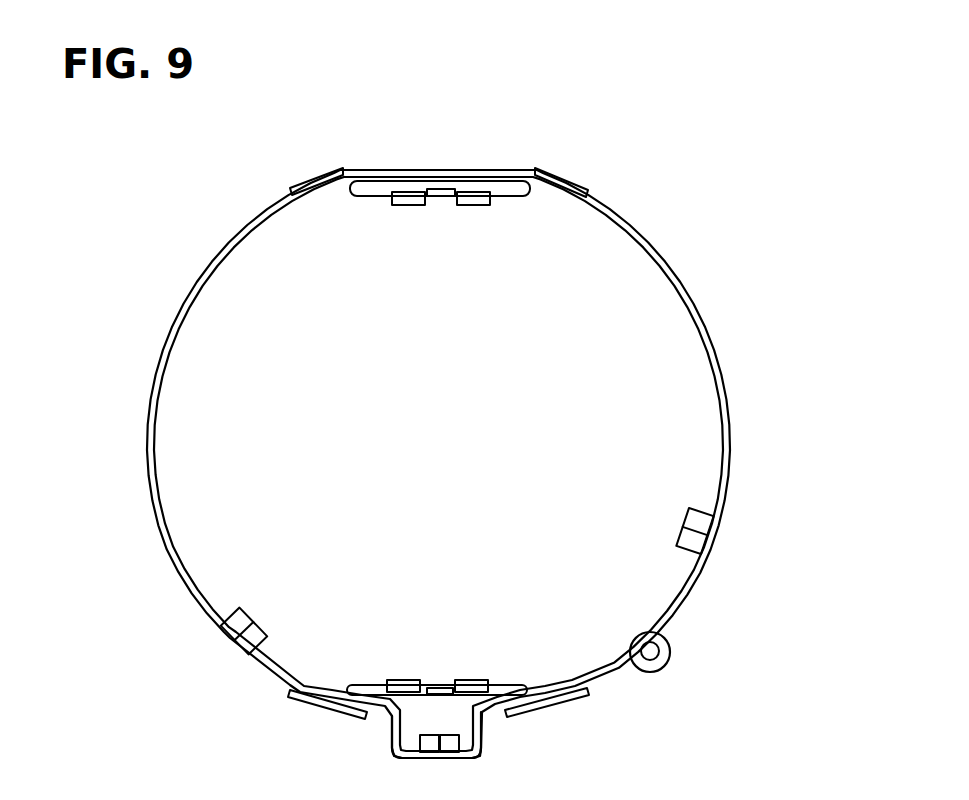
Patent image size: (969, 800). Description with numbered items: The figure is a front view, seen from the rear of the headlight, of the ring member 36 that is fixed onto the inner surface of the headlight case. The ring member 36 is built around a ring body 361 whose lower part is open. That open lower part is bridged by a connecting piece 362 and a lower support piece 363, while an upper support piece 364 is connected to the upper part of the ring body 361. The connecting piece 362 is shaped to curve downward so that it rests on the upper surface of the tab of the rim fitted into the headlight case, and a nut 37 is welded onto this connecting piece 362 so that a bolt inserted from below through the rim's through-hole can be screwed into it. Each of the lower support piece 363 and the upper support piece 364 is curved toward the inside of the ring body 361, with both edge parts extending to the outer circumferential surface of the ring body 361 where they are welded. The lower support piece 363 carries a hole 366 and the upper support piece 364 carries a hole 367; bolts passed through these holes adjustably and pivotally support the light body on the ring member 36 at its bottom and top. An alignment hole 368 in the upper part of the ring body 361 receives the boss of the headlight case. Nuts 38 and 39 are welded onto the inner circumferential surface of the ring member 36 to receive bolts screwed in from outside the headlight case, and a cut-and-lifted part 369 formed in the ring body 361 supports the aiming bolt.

The ring member 36 is at (685, 259).
The ring body 361 is at (724, 373).
The connecting piece 362 is at (484, 733).
The lower support piece 363 is at (503, 683).
The upper support piece 364 is at (520, 197).
The hole 366 is at (438, 683).
The hole 367 is at (440, 197).
The alignment hole 368 is at (425, 170).
The cut-and-lifted part 369 is at (668, 645).
The nut 37 is at (395, 738).
The nut 38 is at (240, 612).
The nut 39 is at (685, 535).